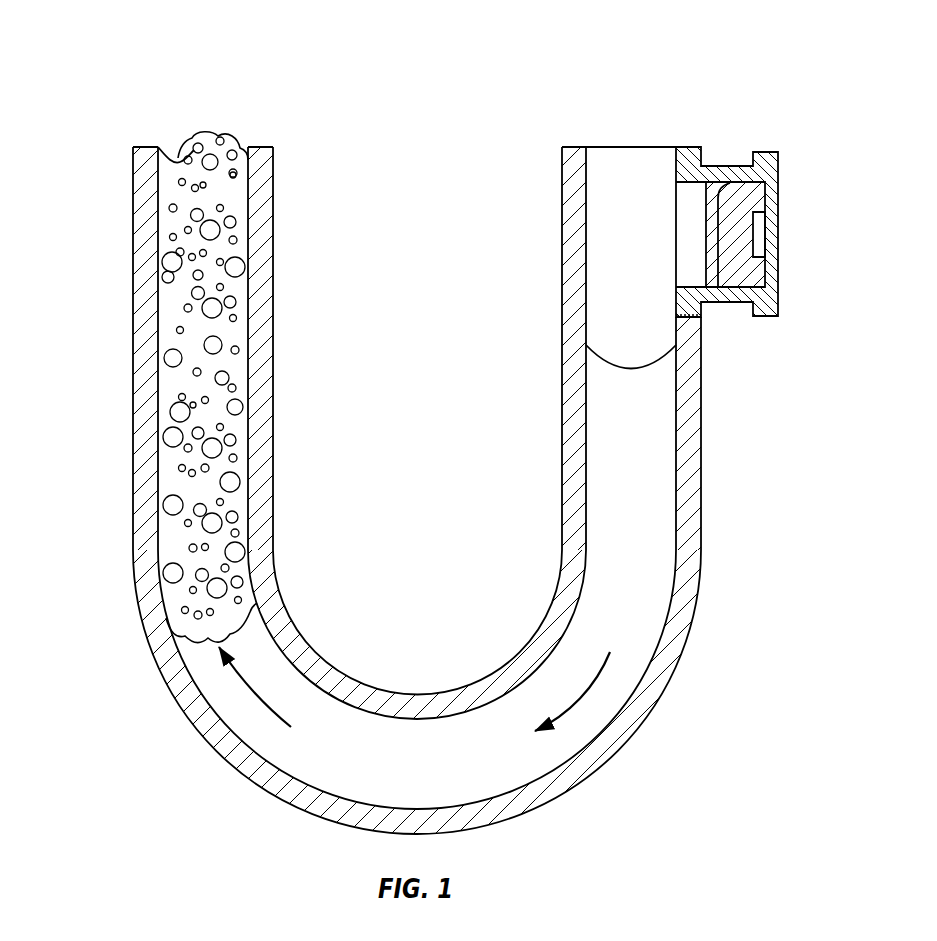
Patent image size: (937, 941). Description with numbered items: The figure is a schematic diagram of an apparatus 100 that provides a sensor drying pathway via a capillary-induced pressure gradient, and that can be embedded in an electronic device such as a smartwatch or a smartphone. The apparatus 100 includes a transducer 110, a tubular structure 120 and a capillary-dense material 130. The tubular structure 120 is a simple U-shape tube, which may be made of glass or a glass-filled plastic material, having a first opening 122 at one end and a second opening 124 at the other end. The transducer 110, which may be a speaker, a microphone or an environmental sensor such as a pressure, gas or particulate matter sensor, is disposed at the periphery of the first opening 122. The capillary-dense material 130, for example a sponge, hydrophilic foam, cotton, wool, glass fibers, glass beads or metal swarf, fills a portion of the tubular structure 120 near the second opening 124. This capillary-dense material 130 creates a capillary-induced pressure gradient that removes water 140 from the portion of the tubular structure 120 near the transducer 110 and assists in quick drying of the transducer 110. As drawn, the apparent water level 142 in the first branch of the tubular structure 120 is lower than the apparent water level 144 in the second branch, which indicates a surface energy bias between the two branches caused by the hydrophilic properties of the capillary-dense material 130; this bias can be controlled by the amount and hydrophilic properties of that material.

The apparatus 100 is at (64, 86).
The transducer 110 is at (784, 198).
The tubular structure 120 is at (560, 360).
The first opening 122 is at (636, 119).
The second opening 124 is at (221, 124).
The capillary-dense material 130 is at (165, 288).
The water 140 is at (640, 549).
The apparent water level in the first branch 142 is at (634, 369).
The apparent water level in the second branch 144 is at (162, 164).